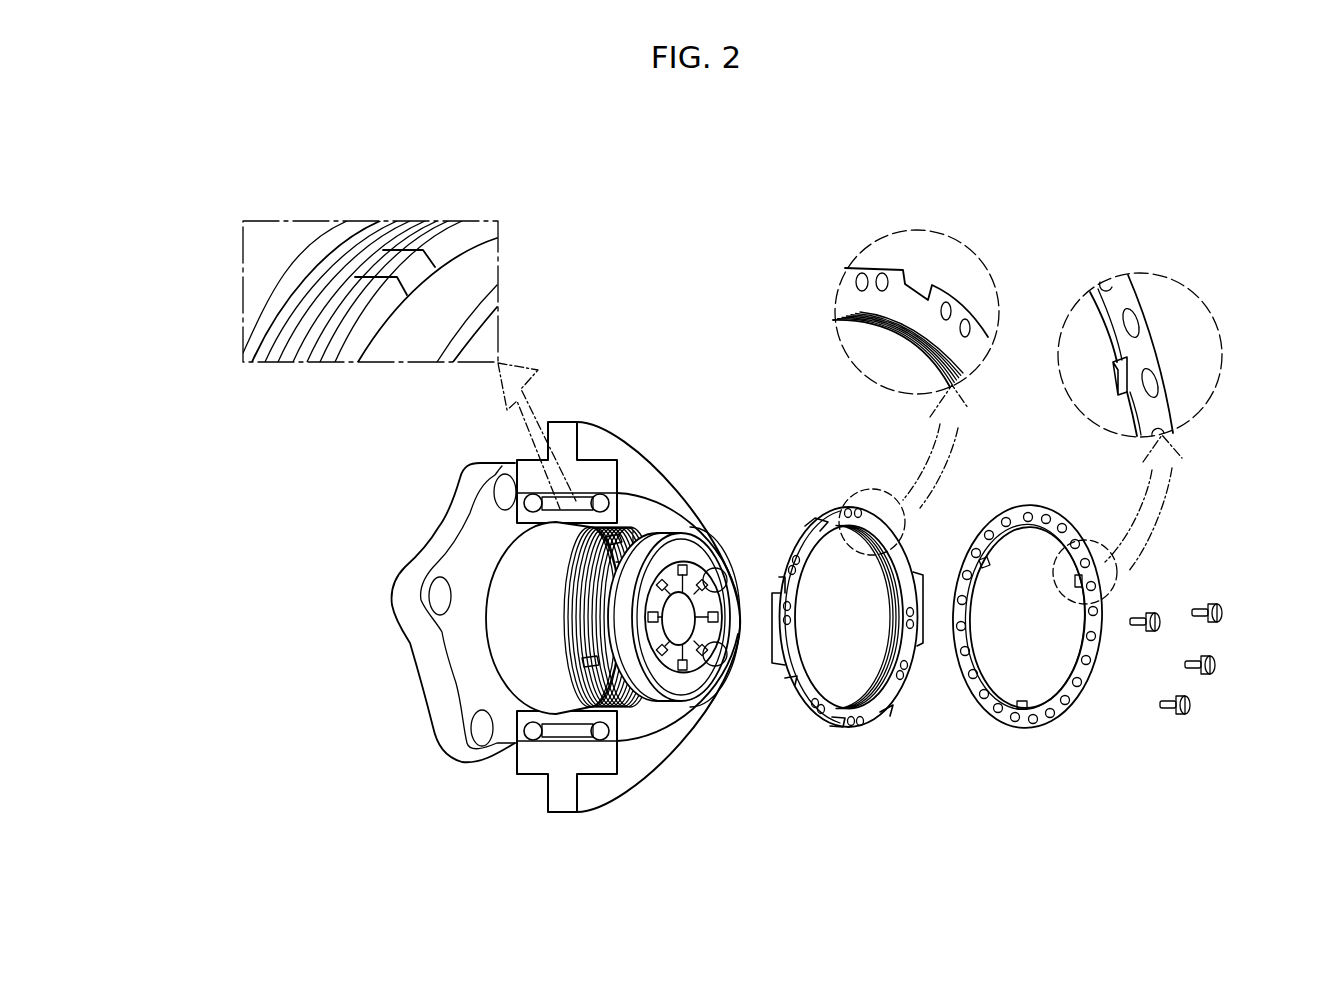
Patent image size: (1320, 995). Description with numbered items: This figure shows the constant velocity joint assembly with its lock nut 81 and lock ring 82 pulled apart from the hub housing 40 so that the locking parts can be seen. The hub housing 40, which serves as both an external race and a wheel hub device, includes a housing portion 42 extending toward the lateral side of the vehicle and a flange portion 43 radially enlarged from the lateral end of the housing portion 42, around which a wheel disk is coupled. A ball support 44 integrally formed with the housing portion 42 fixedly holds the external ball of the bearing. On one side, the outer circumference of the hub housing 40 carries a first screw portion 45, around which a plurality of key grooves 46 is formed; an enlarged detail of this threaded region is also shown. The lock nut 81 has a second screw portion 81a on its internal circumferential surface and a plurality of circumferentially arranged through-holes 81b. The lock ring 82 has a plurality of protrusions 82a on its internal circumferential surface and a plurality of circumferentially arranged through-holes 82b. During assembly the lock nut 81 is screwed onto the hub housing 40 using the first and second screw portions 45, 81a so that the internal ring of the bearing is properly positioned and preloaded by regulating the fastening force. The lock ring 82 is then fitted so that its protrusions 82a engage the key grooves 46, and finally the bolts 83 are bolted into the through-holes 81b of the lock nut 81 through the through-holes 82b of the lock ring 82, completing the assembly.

The hub housing 40 is at (403, 545).
The housing portion 42 is at (523, 660).
The flange portion 43 is at (435, 665).
The ball support 44 is at (475, 636).
The first screw portion 45 is at (578, 620).
The key grooves 46 is at (583, 708).
The lock nut 81 is at (918, 512).
The second screw portion 81a is at (905, 335).
The through-holes 81b is at (968, 322).
The lock ring 82 is at (1120, 538).
The protrusions 82a is at (1116, 387).
The through-holes 82b is at (1155, 382).
The bolts 83 is at (1168, 710).